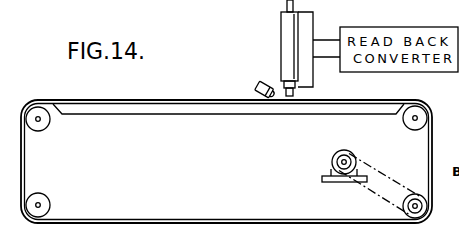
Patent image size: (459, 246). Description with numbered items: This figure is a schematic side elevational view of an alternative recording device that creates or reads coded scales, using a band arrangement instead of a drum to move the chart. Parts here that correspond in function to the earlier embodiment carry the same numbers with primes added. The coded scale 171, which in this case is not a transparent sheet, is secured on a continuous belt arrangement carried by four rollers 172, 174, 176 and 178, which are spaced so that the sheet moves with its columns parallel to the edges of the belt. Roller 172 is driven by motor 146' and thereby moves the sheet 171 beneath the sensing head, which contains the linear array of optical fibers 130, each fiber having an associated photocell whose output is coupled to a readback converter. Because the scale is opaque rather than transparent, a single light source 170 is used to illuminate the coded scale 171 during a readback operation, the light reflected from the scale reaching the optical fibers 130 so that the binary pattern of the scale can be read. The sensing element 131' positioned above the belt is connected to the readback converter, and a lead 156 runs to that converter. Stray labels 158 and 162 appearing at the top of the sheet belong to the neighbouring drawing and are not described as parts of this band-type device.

The coded scale 171 is at (180, 100).
The roller 176 is at (50, 126).
The roller 174 is at (408, 128).
The roller 178 is at (52, 205).
The roller 172 is at (403, 211).
The motor 146' is at (349, 181).
The read back sensor 131' is at (288, 48).
The light source 170 is at (259, 83).
The optical fibers 130 is at (285, 2).
The read back converter lead 156 is at (403, 27).
The element 158 is at (33, 8).
The element 162 is at (154, 4).